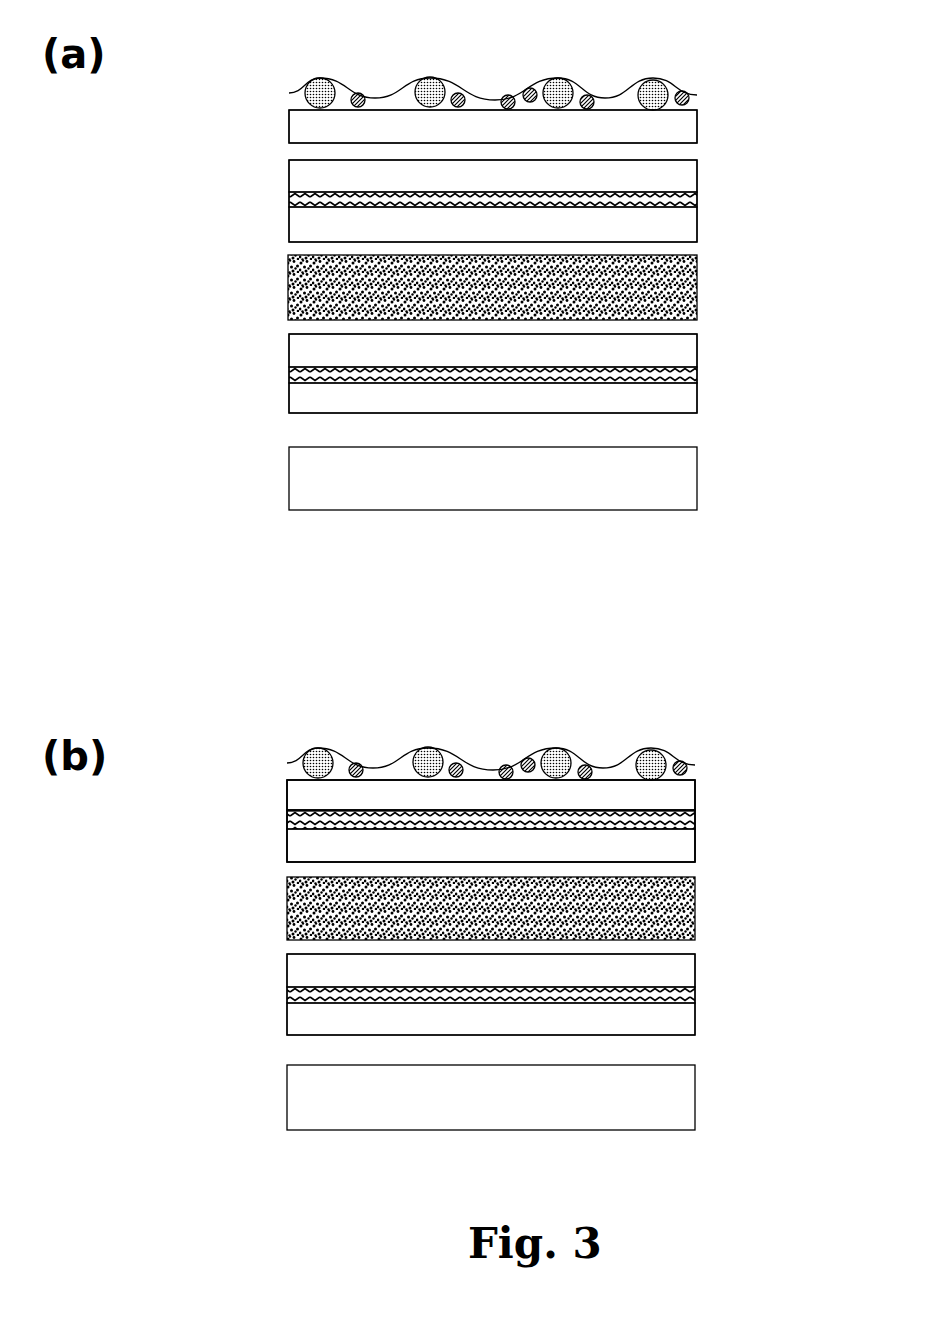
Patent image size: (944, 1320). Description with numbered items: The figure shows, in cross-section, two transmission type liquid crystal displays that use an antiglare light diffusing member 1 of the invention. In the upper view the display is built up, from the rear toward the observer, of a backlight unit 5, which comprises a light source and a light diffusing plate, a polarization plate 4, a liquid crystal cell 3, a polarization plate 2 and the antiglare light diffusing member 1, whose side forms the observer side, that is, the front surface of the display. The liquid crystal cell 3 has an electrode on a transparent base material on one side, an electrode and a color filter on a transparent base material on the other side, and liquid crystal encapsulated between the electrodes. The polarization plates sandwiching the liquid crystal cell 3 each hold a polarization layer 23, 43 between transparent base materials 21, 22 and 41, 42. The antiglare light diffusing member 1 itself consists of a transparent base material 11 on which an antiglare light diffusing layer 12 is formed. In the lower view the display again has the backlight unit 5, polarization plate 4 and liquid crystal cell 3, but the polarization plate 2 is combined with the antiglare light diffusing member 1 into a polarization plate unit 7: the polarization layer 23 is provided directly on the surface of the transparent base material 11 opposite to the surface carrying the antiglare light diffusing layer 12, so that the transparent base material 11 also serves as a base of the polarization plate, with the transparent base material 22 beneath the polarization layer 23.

The antiglare light diffusing member 1 is at (713, 93).
The polarization plate 2 is at (715, 157).
The liquid crystal cell 3 is at (680, 307).
The polarization plate 4 is at (725, 333).
The backlight unit 5 is at (680, 485).
The polarization plate unit 7 is at (832, 757).
The transparent base material 11 is at (303, 128).
The antiglare light diffusing layer 12 is at (277, 80).
The transparent base material 21 is at (303, 175).
The transparent base material 22 is at (307, 232).
The polarization layer 23 is at (305, 202).
The transparent base material 41 is at (305, 347).
The transparent base material 42 is at (313, 403).
The polarization layer 43 is at (305, 375).